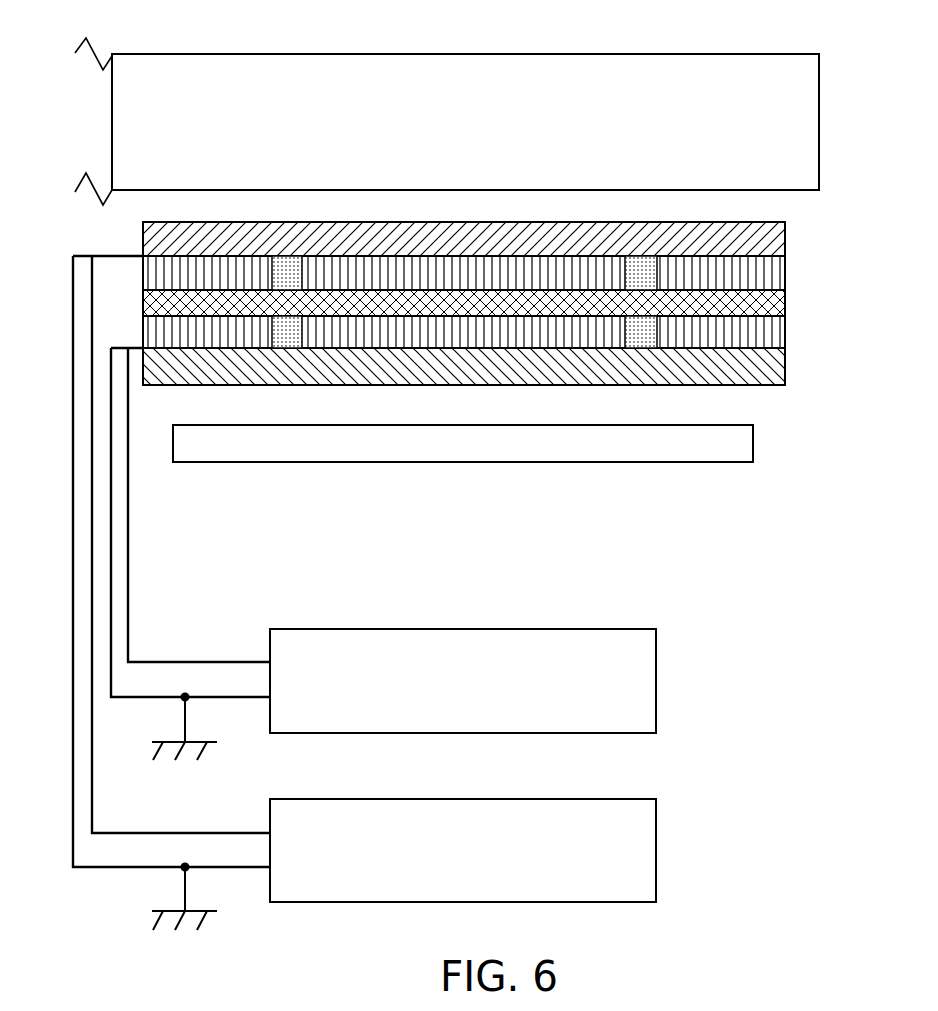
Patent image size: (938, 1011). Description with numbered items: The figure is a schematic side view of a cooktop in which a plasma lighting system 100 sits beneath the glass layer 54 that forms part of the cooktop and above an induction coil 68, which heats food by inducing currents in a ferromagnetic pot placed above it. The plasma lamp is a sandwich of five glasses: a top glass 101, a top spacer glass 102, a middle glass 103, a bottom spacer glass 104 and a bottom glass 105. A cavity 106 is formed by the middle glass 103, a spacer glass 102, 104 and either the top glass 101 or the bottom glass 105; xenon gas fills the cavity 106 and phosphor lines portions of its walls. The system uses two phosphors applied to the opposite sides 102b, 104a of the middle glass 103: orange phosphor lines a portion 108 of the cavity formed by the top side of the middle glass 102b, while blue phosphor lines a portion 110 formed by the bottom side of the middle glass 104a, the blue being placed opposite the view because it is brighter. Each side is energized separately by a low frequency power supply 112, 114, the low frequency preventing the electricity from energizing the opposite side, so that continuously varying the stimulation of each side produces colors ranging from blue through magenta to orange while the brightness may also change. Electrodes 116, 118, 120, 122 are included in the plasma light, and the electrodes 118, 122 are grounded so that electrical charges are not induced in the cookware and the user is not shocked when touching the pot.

The glass layer 54 is at (159, 67).
The top glass 101 is at (787, 238).
The top spacer glass 102 is at (787, 270).
The top side of the middle glass 102b is at (787, 290).
The middle glass 103 is at (787, 302).
The bottom side of the middle glass 104a is at (787, 318).
The bottom spacer glass 104 is at (787, 336).
The bottom glass 105 is at (789, 380).
The cavity 106 is at (294, 261).
The portion of the cavity lined with blue phosphor 110 is at (291, 309).
The portion of the cavity lined with orange phosphor 108 is at (646, 283).
The induction coil 68 is at (275, 463).
The plasma lighting system 100 is at (701, 536).
The low frequency power supply 112 is at (572, 629).
The low frequency power supply 114 is at (575, 799).
The electrode 116 is at (127, 358).
The grounded electrode 118 is at (110, 349).
The electrode 120 is at (92, 261).
The grounded electrode 122 is at (72, 256).